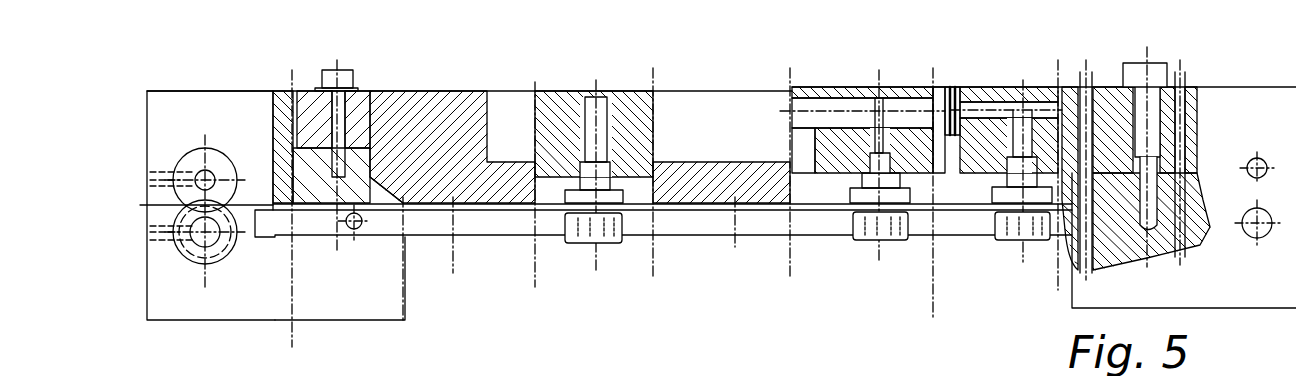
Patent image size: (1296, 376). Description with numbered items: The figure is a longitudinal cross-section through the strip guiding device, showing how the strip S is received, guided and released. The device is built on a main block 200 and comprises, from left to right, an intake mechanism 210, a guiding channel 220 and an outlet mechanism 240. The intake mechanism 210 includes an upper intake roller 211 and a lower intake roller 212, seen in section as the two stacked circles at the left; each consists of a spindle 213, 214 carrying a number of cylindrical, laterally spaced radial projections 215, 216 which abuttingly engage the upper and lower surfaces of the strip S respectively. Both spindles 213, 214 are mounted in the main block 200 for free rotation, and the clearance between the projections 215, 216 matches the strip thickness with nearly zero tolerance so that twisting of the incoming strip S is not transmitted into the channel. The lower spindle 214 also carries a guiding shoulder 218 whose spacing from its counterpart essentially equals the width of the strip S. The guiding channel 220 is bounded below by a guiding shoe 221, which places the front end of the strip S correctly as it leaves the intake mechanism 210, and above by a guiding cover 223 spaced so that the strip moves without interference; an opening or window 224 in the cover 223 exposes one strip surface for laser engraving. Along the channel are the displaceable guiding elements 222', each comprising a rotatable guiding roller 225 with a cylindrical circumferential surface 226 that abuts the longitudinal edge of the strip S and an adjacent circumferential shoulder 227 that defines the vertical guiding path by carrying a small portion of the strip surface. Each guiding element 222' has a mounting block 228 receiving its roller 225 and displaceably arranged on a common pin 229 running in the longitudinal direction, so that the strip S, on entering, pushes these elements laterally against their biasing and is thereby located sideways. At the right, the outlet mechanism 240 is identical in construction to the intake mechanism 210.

The main block 200 is at (352, 303).
The intake mechanism 210 is at (238, 88).
The upper intake roller 211 is at (207, 137).
The lower intake roller 212 is at (207, 278).
The spindle 213 is at (215, 172).
The spindle 214 is at (228, 246).
The radial projections 215 is at (190, 166).
The radial projections 216 is at (190, 256).
The guiding shoulder 218 is at (215, 262).
The guiding channel 220 is at (611, 84).
The guiding shoe 221 is at (470, 230).
The guiding elements 222' is at (803, 254).
The guiding cover 223 is at (427, 90).
The opening or window 224 is at (735, 115).
The guiding roller 225 is at (600, 241).
The circumferential surface 226 is at (563, 203).
The circumferential shoulder 227 is at (630, 207).
The mounting block 228 is at (665, 105).
The common pin 229 is at (832, 105).
The outlet mechanism 240 is at (1250, 85).
The strip S is at (147, 205).